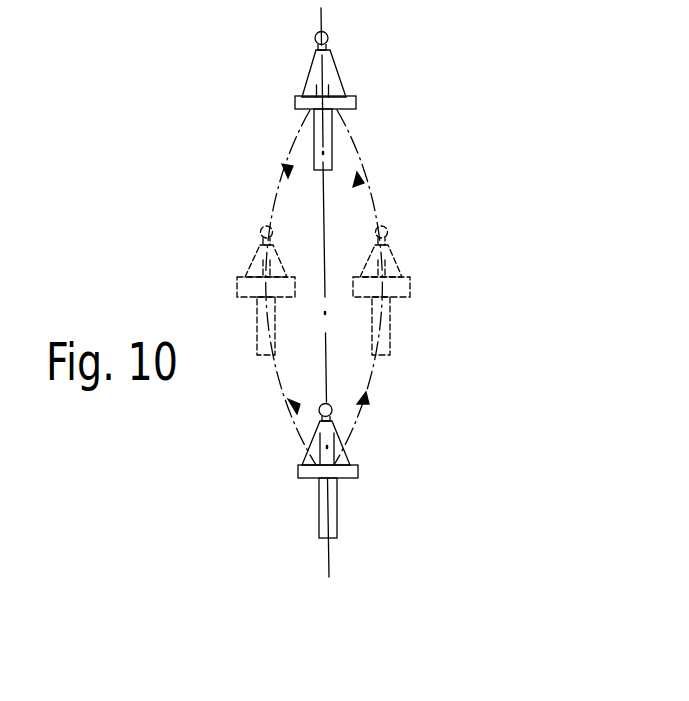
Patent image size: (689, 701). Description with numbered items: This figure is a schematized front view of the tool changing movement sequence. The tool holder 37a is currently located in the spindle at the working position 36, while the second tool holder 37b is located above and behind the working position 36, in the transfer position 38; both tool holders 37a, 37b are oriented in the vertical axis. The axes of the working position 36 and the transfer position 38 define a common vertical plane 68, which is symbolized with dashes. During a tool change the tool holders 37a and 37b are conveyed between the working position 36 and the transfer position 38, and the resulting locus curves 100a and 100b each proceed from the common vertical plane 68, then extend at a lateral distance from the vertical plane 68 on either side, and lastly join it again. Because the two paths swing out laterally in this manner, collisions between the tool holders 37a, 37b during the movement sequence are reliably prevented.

The transfer position 38 is at (322, 13).
The tool holder 37a is at (333, 80).
The second tool holder 37b is at (332, 516).
The locus curve 100a is at (280, 202).
The locus curve 100b is at (371, 222).
The common vertical plane 68 is at (325, 341).
The working position 36 is at (331, 562).